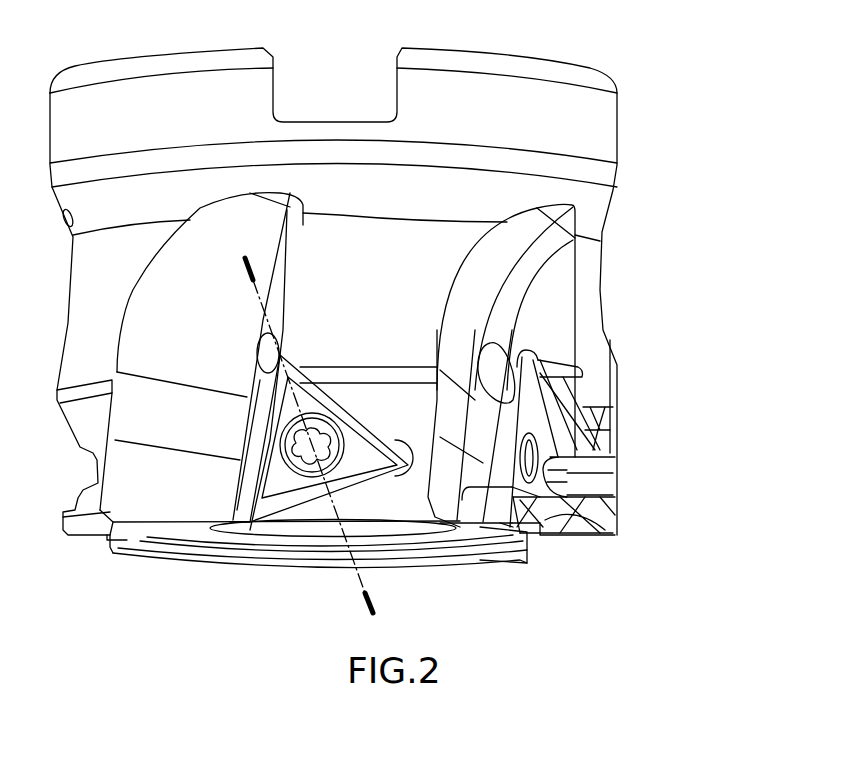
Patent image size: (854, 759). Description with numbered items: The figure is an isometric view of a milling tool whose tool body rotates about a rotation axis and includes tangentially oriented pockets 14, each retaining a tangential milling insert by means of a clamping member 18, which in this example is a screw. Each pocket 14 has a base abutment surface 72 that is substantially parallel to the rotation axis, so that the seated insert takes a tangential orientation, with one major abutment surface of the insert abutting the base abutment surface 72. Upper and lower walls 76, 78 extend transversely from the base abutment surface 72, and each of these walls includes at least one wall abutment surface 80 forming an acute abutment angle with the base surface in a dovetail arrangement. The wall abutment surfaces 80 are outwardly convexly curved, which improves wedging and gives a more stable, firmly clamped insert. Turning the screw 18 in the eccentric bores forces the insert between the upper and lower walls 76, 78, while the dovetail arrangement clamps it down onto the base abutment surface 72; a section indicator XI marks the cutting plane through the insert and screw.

The pocket 14 is at (700, 445).
The clamping member 18 is at (280, 490).
The base abutment surface 72 is at (543, 523).
The upper wall 76 is at (565, 405).
The lower wall 78 is at (558, 505).
The wall abutment surface 80 is at (583, 408).
The section line XI is at (247, 270).